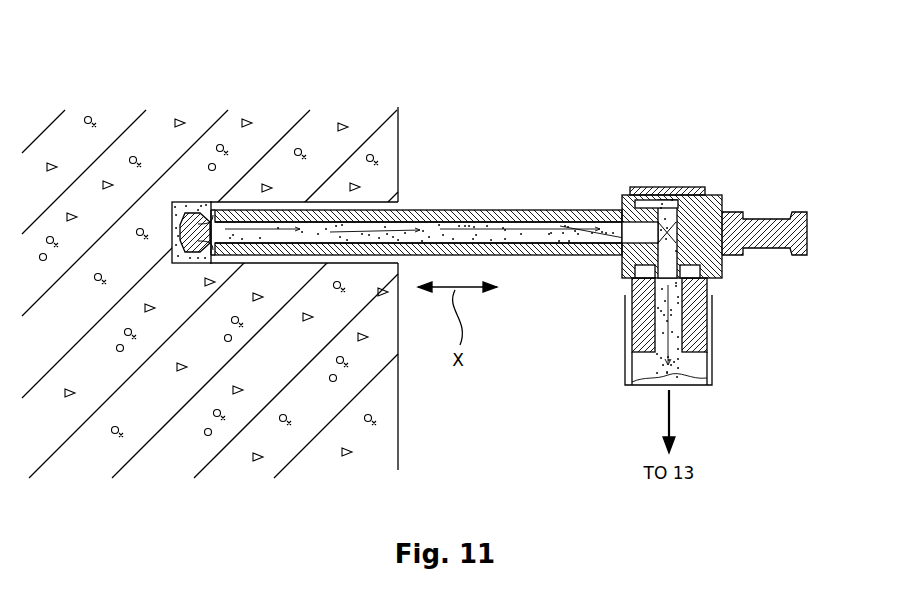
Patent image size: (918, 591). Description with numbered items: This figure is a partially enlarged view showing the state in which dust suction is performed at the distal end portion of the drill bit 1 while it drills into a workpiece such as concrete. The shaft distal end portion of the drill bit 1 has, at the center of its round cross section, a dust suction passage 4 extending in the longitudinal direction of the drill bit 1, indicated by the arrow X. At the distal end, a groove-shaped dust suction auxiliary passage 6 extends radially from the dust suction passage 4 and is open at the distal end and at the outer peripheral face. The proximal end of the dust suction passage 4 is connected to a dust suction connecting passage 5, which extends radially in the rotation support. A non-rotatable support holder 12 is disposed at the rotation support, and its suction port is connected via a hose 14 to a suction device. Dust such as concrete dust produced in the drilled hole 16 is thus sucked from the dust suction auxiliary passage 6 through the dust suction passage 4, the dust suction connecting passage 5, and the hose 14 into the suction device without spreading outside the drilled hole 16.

The drill bit 1 is at (522, 210).
The dust suction passage 4 is at (513, 247).
The dust suction connecting passage 5 is at (673, 250).
The dust suction auxiliary passage 6 is at (212, 205).
The support holder 12 is at (670, 187).
The hose 14 is at (708, 373).
The drilled hole 16 is at (400, 207).